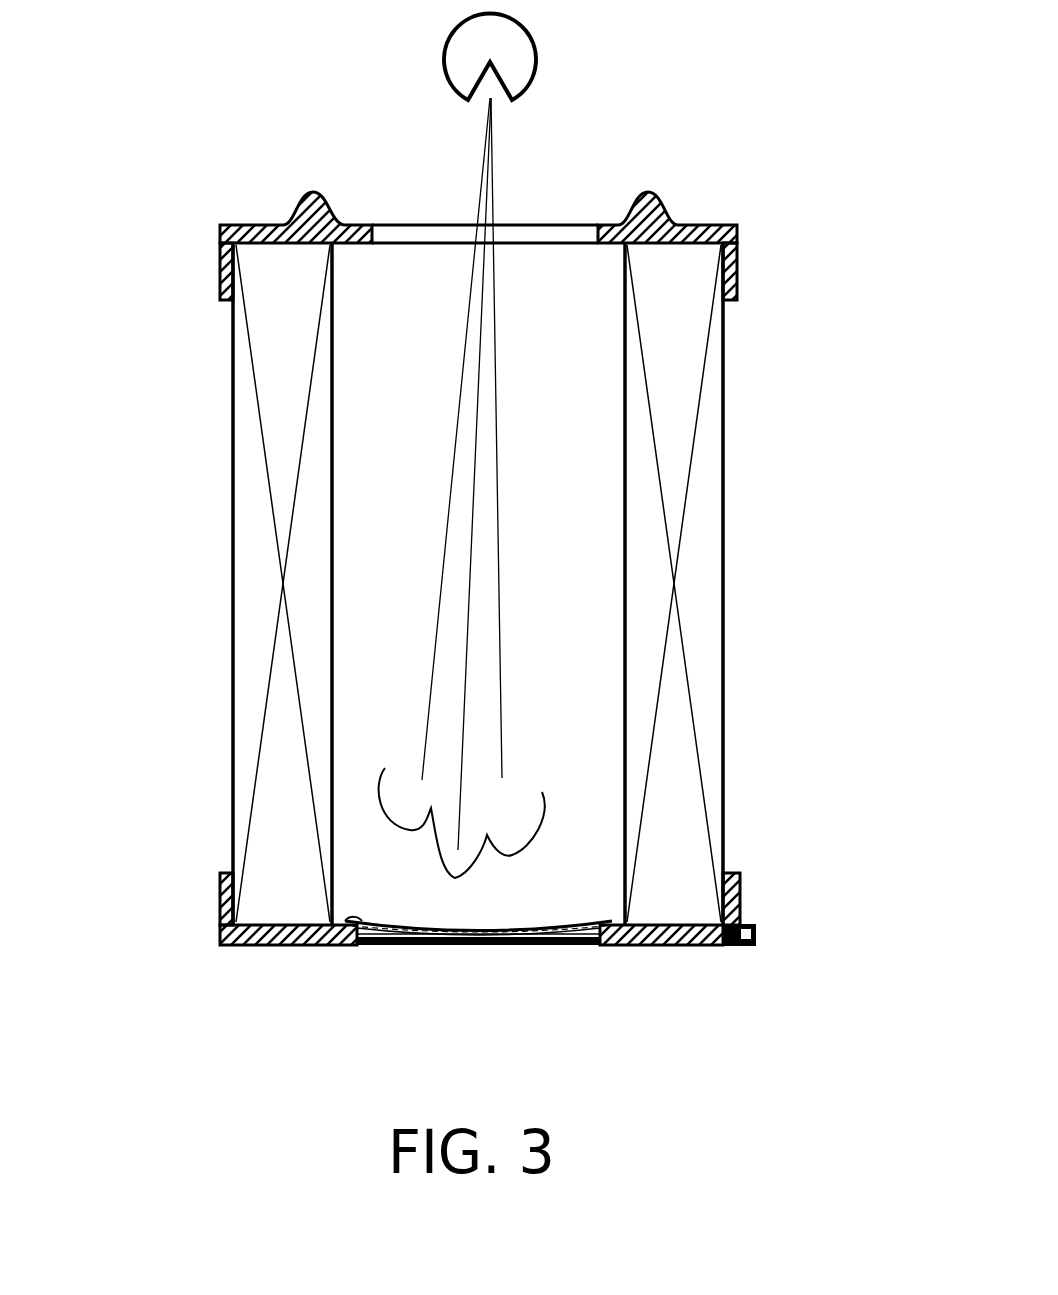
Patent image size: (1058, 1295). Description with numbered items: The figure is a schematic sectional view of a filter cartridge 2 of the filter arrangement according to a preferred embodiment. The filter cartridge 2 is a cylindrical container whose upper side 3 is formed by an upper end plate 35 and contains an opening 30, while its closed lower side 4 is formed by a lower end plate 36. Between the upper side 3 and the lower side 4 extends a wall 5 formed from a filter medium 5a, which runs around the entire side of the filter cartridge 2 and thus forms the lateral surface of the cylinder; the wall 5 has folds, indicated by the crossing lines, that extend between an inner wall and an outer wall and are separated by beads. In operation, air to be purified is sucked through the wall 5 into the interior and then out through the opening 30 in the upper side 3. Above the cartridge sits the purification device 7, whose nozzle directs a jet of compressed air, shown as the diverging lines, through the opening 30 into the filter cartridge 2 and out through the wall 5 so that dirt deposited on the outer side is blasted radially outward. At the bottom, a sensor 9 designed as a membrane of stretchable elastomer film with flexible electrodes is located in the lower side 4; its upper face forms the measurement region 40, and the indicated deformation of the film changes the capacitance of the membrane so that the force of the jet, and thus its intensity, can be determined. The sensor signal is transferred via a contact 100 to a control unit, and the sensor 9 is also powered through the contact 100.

The filter cartridge 2 is at (498, 584).
The upper side 3 is at (416, 170).
The lower side 4 is at (427, 886).
The wall 5 is at (186, 603).
The filter medium 5a is at (706, 578).
The purification device 7 is at (527, 63).
The sensor 9 is at (590, 947).
The opening 30 is at (538, 194).
The upper end plate 35 is at (222, 258).
The lower end plate 36 is at (220, 937).
The measurement region 40 is at (400, 920).
The contact 100 is at (748, 947).